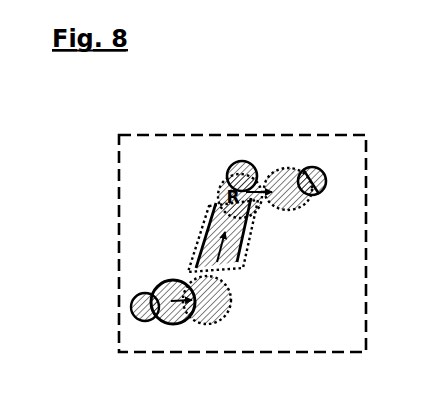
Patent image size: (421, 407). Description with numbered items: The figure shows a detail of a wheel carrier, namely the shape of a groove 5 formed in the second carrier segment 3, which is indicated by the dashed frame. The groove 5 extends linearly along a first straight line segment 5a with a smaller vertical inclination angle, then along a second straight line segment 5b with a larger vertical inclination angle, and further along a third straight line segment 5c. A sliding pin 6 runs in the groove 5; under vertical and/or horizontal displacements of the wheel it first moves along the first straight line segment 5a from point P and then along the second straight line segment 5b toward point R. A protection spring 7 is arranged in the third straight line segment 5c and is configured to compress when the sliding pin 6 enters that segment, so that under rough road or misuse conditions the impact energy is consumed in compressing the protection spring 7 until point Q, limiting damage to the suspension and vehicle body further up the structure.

The second carrier segment 3 is at (163, 146).
The groove 5 is at (136, 286).
The first straight line segment 5a is at (163, 336).
The second straight line segment 5b is at (246, 269).
The third straight line segment 5c is at (293, 224).
The sliding pin 6 is at (170, 280).
The protection spring 7 is at (318, 200).